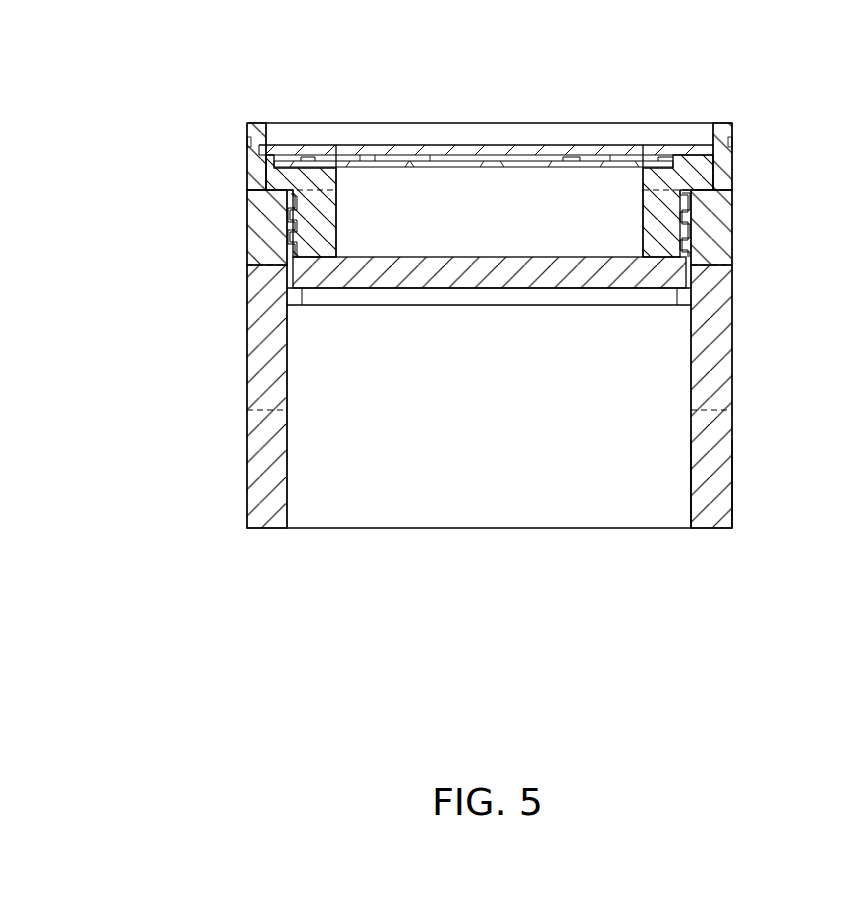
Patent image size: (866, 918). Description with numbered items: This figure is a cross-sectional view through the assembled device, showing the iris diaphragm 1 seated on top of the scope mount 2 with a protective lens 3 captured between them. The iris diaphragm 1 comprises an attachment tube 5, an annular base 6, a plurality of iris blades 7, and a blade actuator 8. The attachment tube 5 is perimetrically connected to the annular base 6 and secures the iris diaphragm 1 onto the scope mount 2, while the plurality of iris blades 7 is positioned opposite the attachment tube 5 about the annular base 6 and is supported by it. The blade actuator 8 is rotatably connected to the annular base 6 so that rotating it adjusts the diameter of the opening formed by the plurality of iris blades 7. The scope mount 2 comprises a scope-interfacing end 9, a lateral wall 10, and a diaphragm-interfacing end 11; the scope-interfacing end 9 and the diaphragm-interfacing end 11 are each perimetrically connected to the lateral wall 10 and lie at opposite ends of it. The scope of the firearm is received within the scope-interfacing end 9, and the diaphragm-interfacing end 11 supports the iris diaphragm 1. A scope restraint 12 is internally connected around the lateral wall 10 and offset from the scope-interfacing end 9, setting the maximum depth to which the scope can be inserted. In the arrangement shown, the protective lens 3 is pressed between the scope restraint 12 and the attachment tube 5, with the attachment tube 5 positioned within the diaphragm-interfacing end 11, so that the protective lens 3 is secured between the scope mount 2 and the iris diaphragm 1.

The iris diaphragm 1 is at (147, 166).
The scope mount 2 is at (147, 340).
The protective lens 3 is at (553, 280).
The attachment tube 5 is at (652, 226).
The annular base 6 is at (316, 178).
The plurality of iris blades 7 is at (497, 165).
The blade actuator 8 is at (718, 130).
The scope-interfacing end 9 is at (720, 448).
The lateral wall 10 is at (715, 347).
The diaphragm-interfacing end 11 is at (722, 212).
The scope restraint 12 is at (313, 298).